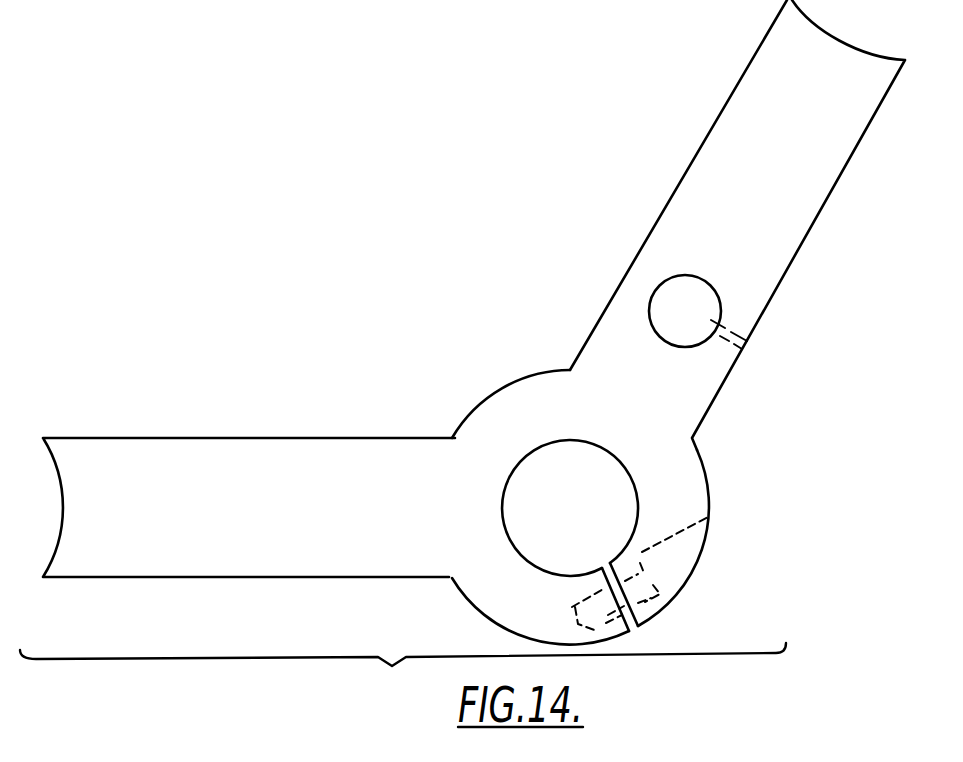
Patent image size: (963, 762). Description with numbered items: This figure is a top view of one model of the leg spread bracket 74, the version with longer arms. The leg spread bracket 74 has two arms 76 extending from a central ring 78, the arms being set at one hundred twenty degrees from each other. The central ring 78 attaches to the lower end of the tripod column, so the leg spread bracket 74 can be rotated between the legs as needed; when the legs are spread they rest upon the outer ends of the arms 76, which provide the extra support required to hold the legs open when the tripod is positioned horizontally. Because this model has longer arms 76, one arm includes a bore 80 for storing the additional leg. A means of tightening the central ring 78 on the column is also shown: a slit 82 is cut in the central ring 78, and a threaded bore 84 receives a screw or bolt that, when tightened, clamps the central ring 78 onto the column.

The leg spread bracket 74 is at (403, 678).
The arms 76 is at (148, 463).
The central ring 78 is at (487, 425).
The bore 80 is at (661, 301).
The slit 82 is at (653, 615).
The threaded bore 84 is at (643, 581).